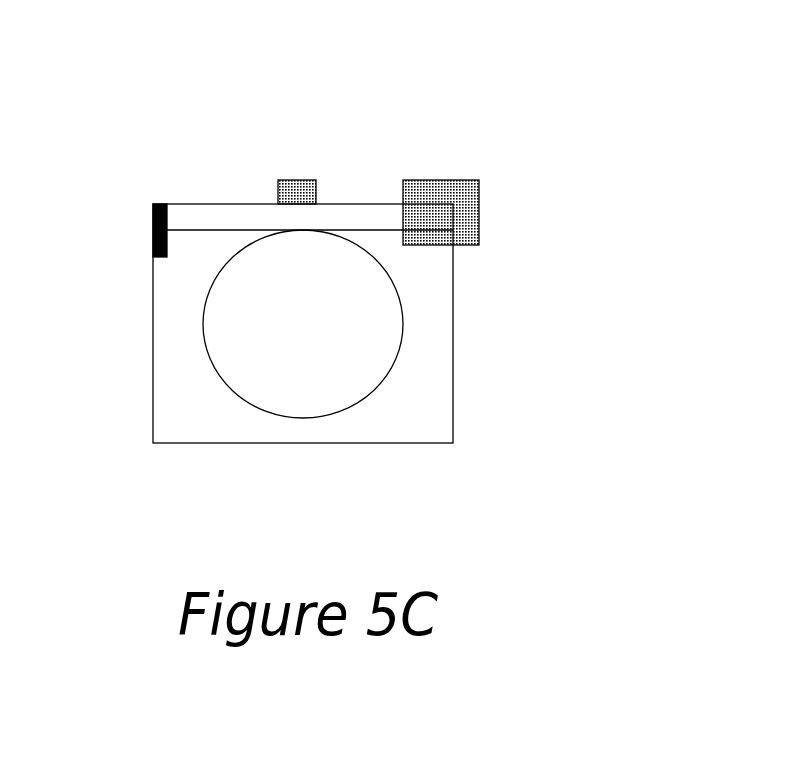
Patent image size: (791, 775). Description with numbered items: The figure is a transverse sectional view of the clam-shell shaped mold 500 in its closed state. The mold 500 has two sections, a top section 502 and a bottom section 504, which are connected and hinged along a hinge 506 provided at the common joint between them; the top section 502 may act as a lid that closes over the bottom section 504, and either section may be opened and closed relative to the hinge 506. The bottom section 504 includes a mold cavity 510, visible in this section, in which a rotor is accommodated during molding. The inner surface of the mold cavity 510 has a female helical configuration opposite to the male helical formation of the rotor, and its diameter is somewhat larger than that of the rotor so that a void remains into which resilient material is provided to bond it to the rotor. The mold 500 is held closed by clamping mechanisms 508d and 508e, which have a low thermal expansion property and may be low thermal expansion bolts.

The mold 500 is at (477, 432).
The top section 502 is at (216, 204).
The bottom section 504 is at (153, 405).
The hinge 506 is at (153, 218).
The clamping mechanism 508d is at (350, 148).
The clamping mechanism 508e is at (479, 193).
The mold cavity 510 is at (303, 324).